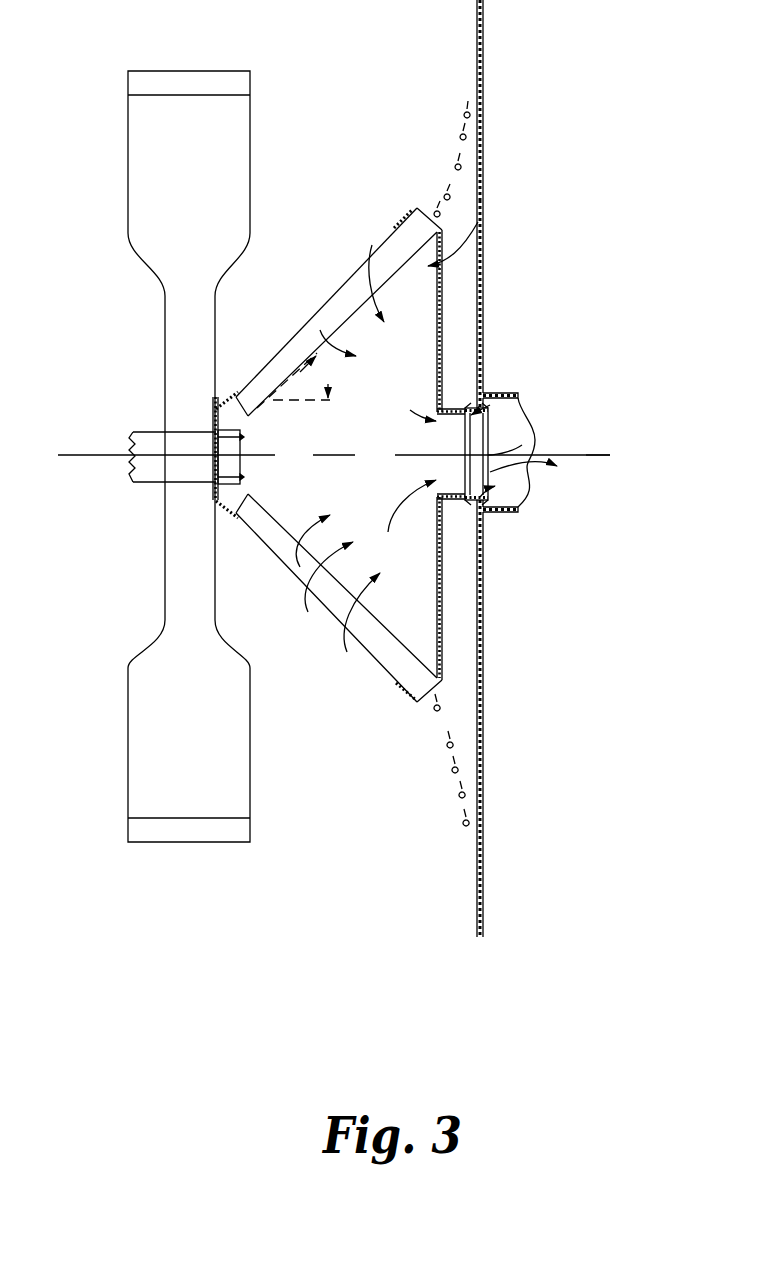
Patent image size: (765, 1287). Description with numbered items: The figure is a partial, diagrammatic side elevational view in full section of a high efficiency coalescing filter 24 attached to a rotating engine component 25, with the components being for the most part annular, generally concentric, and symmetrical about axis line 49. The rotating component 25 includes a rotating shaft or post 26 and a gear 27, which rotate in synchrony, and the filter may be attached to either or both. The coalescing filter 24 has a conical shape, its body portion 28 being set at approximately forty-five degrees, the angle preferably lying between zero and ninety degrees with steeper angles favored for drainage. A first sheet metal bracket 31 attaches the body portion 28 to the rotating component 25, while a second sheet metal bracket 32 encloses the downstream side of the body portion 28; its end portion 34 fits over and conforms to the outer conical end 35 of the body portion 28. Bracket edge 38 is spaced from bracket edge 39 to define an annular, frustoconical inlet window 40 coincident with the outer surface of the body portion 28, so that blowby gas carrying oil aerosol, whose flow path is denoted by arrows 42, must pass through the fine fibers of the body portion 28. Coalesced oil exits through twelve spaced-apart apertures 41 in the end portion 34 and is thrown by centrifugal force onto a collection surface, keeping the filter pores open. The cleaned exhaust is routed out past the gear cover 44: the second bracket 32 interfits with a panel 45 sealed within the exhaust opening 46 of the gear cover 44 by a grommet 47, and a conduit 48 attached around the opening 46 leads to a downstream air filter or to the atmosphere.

The coalescing filter 24 is at (481, 218).
The rotating component 25 is at (182, 414).
The rotating shaft or post 26 is at (155, 468).
The gear 27 is at (140, 150).
The body portion 28 is at (252, 403).
The first sheet metal bracket 31 is at (218, 403).
The second sheet metal bracket 32 is at (444, 250).
The end portion 34 is at (442, 230).
The outer conical end 35 is at (382, 233).
The bracket edge 38 is at (228, 400).
The bracket edge 39 is at (398, 226).
The inlet window 40 is at (340, 287).
The apertures 41 is at (432, 205).
The arrows 42 is at (320, 330).
The gear cover 44 is at (490, 390).
The panel 45 is at (488, 436).
The exhaust opening 46 is at (486, 500).
The grommet 47 is at (488, 424).
The conduit 48 is at (488, 400).
The axis line 49 is at (586, 455).